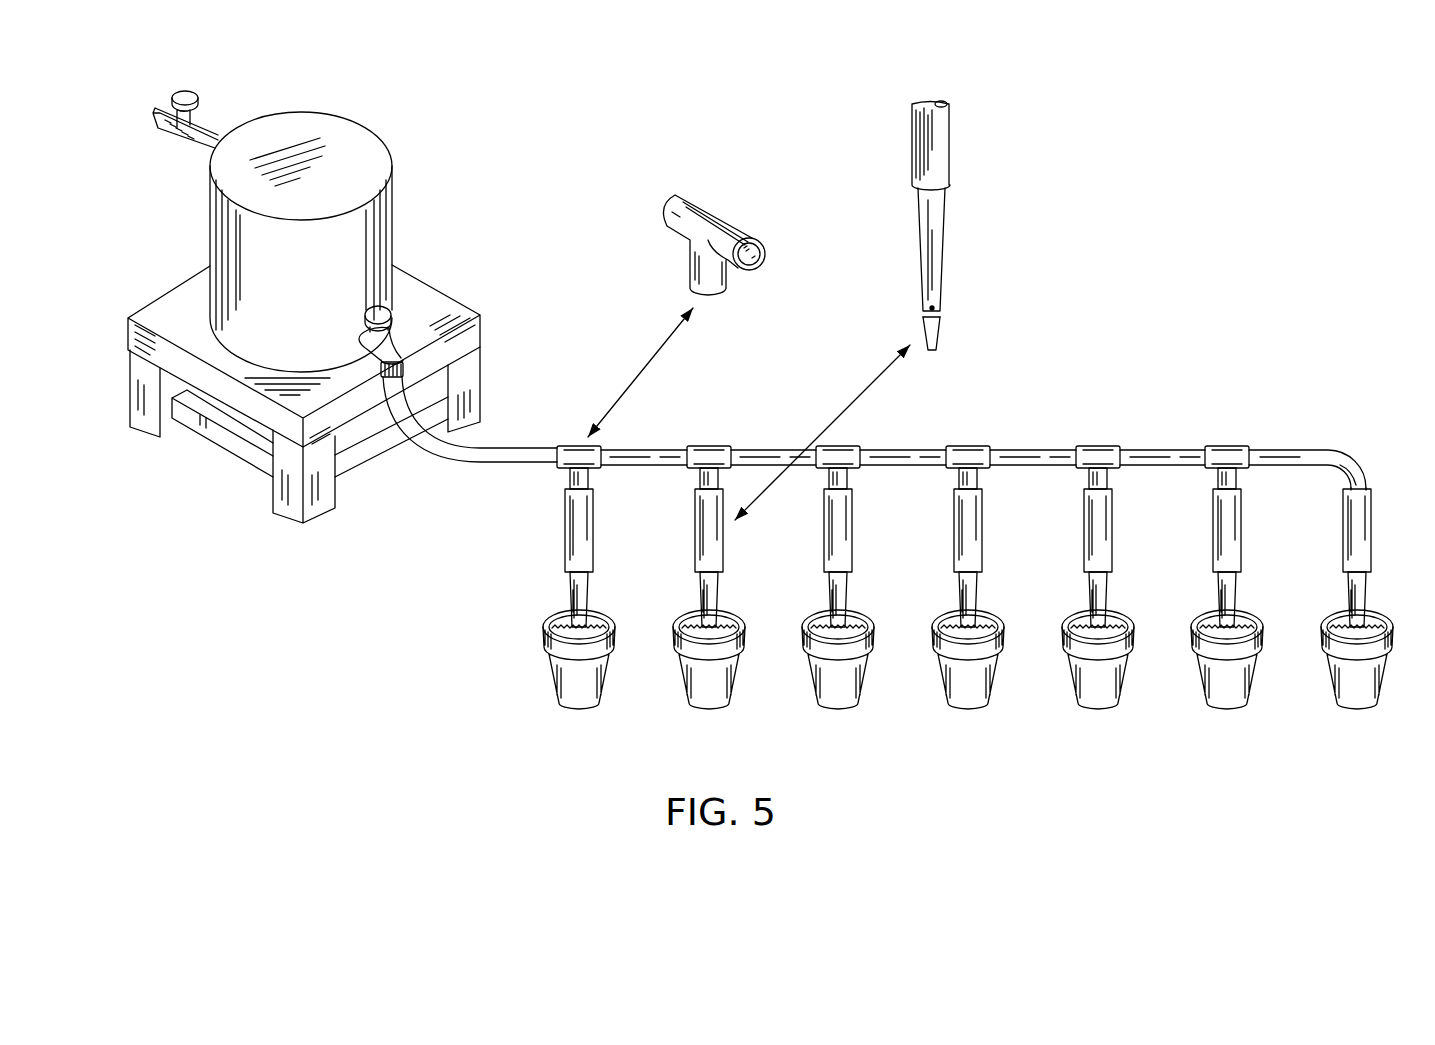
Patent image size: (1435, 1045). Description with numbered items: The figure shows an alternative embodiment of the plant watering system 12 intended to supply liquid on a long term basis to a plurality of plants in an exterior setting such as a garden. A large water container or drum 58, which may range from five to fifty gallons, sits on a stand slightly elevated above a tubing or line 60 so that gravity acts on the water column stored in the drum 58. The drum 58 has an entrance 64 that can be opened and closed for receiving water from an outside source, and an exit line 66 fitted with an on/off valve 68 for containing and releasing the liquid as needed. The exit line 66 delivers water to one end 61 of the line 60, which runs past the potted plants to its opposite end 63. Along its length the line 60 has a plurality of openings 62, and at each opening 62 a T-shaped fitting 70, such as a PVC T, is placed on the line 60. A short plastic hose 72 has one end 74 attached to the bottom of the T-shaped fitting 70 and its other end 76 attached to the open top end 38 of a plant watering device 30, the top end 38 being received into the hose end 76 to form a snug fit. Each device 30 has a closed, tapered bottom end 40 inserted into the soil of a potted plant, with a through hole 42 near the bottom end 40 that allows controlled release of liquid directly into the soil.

The plant watering system 12 is at (1027, 380).
The plant watering device 30 is at (951, 405).
The open top end 38 is at (947, 188).
The closed tapered bottom end 40 is at (937, 348).
The through hole 42 is at (940, 308).
The water container or drum 58 is at (347, 118).
The tubing or line 60 is at (660, 448).
The end of line 61 is at (405, 373).
The opening 62 is at (737, 448).
The end of line 63 is at (1367, 484).
The entrance 64 is at (218, 130).
The exit line 66 is at (395, 342).
The on/off valve 68 is at (390, 313).
The T-shaped fitting 70 is at (722, 222).
The short plastic hose 72 is at (950, 151).
The hose end 74 is at (566, 490).
The hose end 76 is at (604, 568).